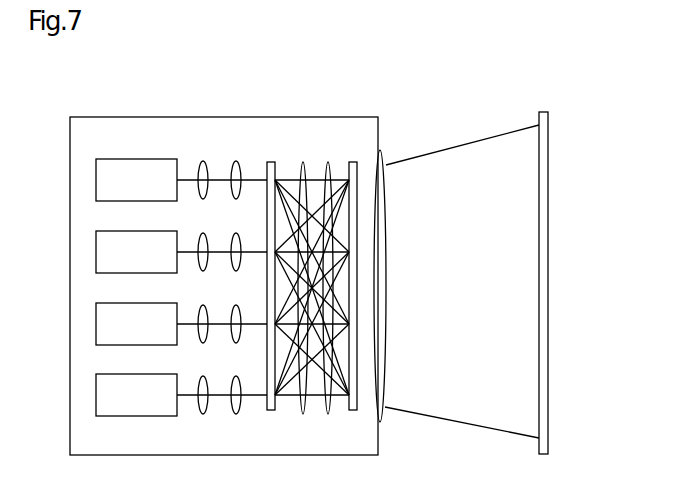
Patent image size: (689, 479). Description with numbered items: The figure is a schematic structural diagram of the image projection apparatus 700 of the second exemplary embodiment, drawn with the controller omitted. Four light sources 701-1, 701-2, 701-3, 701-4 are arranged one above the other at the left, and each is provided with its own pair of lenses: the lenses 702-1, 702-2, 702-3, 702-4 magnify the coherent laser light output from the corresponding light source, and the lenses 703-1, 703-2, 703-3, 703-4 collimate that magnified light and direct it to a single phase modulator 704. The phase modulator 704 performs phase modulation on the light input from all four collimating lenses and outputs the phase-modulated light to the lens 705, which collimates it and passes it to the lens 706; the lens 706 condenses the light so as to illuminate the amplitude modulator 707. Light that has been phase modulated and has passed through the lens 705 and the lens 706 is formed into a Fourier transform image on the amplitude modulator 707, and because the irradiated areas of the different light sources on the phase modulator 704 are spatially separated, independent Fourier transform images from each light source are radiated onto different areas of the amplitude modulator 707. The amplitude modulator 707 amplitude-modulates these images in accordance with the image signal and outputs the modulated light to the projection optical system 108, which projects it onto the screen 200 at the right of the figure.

The image projection apparatus 700 is at (224, 117).
The light source 701-1 is at (127, 159).
The light source 701-2 is at (127, 231).
The light source 701-3 is at (127, 303).
The light source 701-4 is at (127, 374).
The lens 702-1 is at (200, 160).
The lens 702-2 is at (200, 232).
The lens 702-3 is at (200, 304).
The lens 702-4 is at (200, 375).
The lens 703-1 is at (237, 160).
The lens 703-2 is at (237, 232).
The lens 703-3 is at (237, 304).
The lens 703-4 is at (237, 375).
The phase modulator 704 is at (268, 411).
The lens 705 is at (302, 162).
The lens 706 is at (328, 414).
The amplitude modulator 707 is at (350, 162).
The projection optical system 108 is at (379, 422).
The screen 200 is at (543, 112).